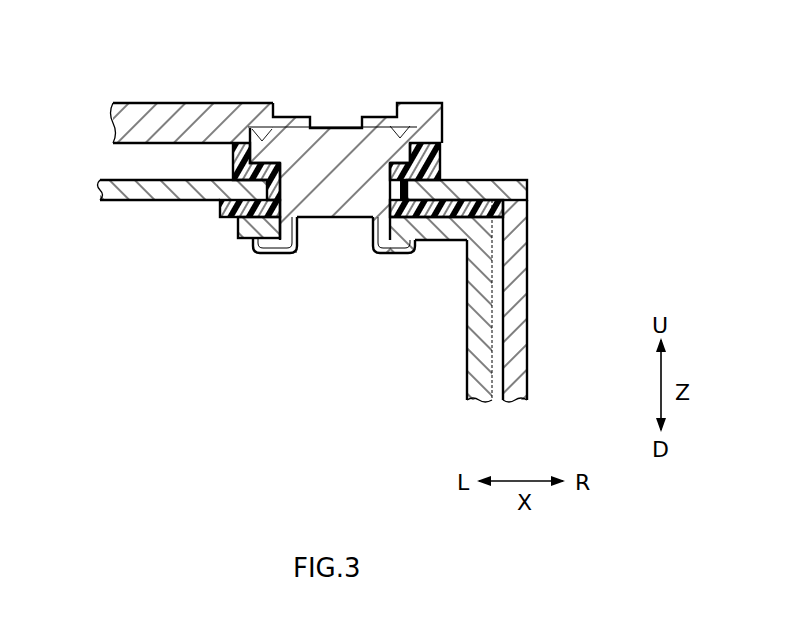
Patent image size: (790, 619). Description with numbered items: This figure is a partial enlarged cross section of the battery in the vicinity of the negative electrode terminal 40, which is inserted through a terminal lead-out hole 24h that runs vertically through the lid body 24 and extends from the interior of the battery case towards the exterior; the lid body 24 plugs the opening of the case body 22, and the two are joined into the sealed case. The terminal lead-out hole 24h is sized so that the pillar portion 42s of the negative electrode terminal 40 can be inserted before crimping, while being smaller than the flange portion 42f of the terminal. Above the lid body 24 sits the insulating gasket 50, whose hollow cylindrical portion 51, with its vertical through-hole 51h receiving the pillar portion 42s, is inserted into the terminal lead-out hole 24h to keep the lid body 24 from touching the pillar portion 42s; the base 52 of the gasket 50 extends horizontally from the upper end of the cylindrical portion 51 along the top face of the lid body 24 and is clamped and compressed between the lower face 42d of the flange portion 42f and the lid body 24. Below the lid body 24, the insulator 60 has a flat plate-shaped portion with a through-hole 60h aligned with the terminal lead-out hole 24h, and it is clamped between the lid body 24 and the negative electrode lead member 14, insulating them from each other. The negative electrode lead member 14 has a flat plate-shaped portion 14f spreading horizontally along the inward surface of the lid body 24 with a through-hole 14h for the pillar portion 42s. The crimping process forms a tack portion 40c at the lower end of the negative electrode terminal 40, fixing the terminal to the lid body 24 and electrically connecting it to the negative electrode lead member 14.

The negative electrode terminal 40 is at (434, 94).
The flange portion 42f is at (268, 153).
The lower face 42d is at (394, 162).
The pillar portion 42s is at (333, 190).
The tack portion 40c is at (373, 255).
The gasket 50 is at (224, 152).
The cylindrical portion 51 is at (268, 186).
The through-hole 51h is at (278, 203).
The insulator 60 is at (204, 217).
The through-hole 60h is at (277, 253).
The base 52 is at (420, 172).
The terminal lead-out hole 24h is at (410, 195).
The lid body 24 is at (493, 190).
The case body 22 is at (515, 372).
The negative electrode lead member 14 is at (503, 325).
The flat plate-shaped portion 14f is at (485, 232).
The through-hole 14h is at (388, 250).